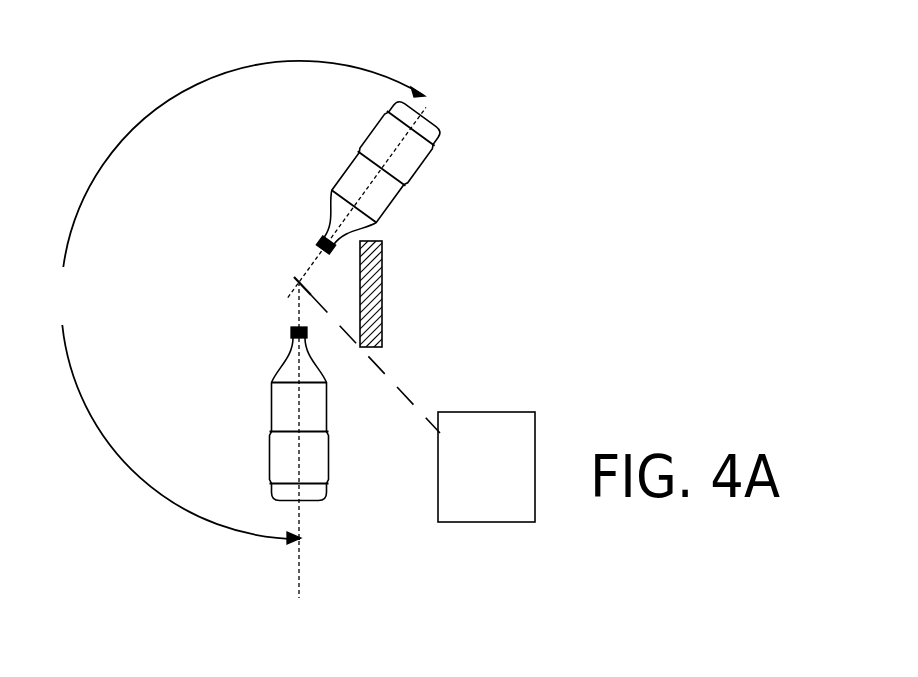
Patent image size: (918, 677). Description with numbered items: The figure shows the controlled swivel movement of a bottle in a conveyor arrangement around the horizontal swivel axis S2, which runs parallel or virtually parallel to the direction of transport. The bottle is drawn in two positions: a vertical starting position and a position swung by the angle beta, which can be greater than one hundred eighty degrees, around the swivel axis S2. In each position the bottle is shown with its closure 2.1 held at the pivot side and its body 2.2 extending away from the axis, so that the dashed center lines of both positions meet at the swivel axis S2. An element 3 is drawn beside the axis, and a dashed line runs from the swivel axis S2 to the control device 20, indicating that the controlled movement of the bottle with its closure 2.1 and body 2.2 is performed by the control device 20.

The closure of container 2.1 is at (319, 247).
The container body 2.2 is at (433, 112).
The mirror 3 is at (382, 302).
The control device 20 is at (504, 490).
The swivel axis S2 is at (296, 281).